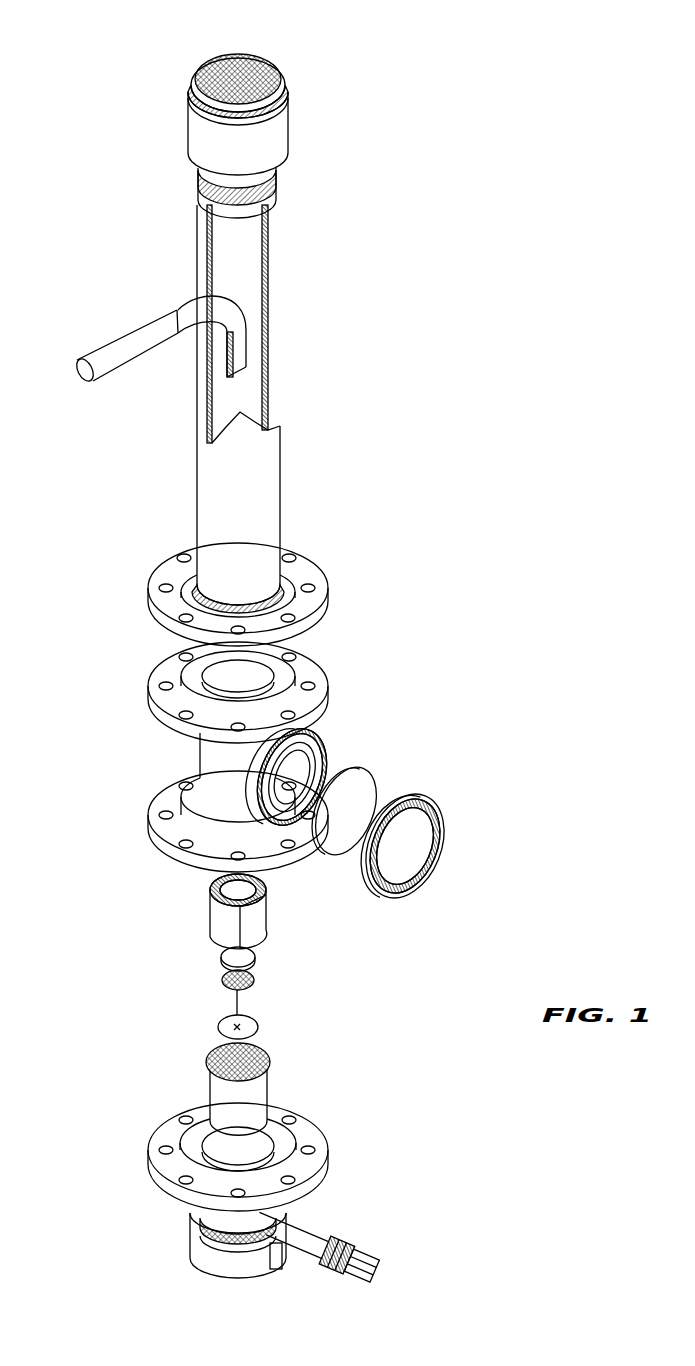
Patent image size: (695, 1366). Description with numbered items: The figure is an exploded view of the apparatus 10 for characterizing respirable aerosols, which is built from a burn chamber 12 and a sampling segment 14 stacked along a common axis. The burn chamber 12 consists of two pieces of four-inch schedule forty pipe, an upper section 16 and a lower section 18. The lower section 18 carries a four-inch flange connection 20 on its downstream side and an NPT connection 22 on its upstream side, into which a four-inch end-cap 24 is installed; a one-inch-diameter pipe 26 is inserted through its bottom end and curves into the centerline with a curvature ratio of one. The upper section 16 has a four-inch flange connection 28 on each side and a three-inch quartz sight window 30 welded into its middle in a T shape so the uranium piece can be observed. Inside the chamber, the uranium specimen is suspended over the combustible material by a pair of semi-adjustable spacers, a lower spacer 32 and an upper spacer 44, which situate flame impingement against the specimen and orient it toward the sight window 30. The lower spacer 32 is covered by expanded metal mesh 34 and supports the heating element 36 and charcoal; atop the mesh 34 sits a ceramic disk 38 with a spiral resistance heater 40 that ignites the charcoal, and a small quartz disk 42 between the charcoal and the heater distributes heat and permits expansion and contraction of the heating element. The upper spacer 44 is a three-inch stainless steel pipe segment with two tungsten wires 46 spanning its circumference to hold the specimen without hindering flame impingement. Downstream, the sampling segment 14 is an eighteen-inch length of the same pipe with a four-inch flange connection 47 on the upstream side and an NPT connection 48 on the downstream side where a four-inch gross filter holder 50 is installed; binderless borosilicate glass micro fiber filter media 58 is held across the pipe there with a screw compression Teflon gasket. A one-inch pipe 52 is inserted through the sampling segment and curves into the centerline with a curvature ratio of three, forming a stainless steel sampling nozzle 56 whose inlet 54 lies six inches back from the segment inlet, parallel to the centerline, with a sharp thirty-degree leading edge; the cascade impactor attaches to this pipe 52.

The apparatus 10 is at (430, 300).
The burn chamber 12 is at (375, 1024).
The sampling segment 14 is at (342, 488).
The upper section 16 is at (341, 729).
The lower section 18 is at (352, 1198).
The flange connection 20 is at (327, 1140).
The NPT connection 22 is at (178, 1226).
The end-cap 24 is at (178, 1258).
The pipe 26 is at (308, 1250).
The flange connection 28 is at (150, 670).
The quartz sight window 30 is at (383, 761).
The lower spacer 32 is at (268, 1088).
The expanded metal mesh 34 is at (265, 1057).
The heating element 36 is at (275, 995).
The ceramic disk 38 is at (256, 1025).
The spiral resistance heater 40 is at (253, 975).
The quartz disk 42 is at (252, 950).
The upper spacer 44 is at (210, 916).
The tungsten wires 46 is at (243, 892).
The flange connection 47 is at (150, 570).
The NPT connection 48 is at (301, 149).
The gross filter holder 50 is at (304, 87).
The pipe 52 is at (110, 343).
The inlet 54 is at (294, 359).
The sampling nozzle 56 is at (248, 374).
The filter media 58 is at (241, 66).